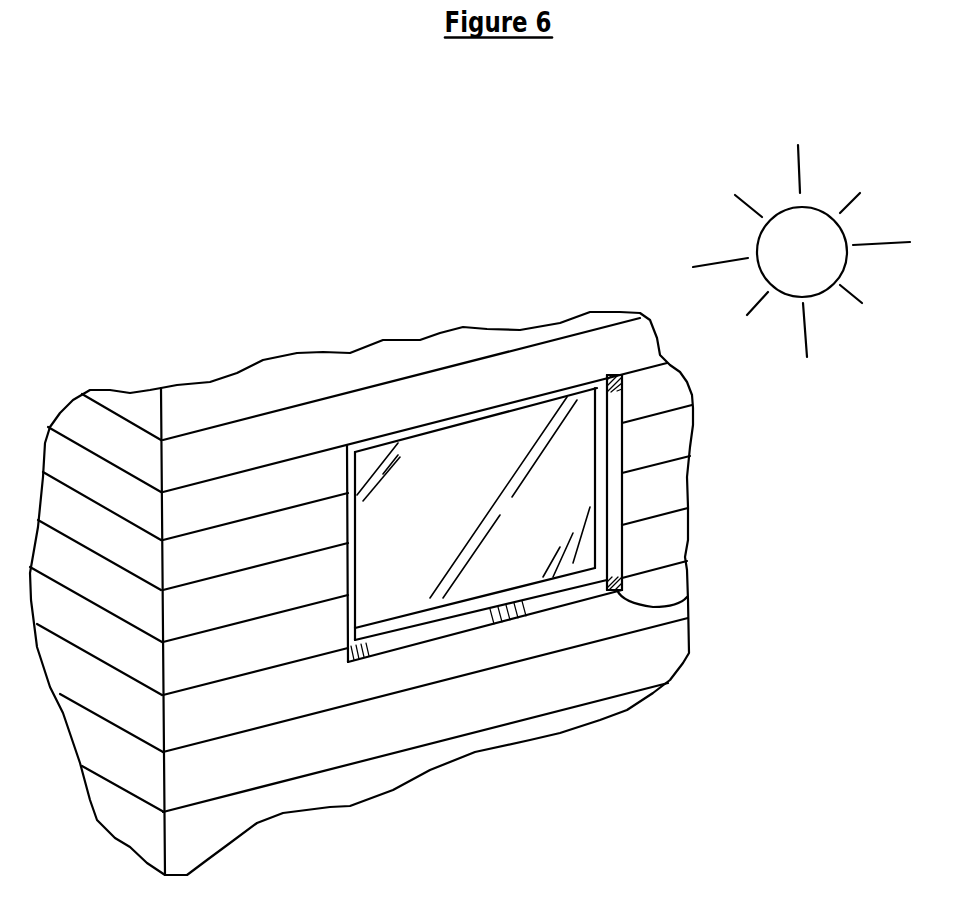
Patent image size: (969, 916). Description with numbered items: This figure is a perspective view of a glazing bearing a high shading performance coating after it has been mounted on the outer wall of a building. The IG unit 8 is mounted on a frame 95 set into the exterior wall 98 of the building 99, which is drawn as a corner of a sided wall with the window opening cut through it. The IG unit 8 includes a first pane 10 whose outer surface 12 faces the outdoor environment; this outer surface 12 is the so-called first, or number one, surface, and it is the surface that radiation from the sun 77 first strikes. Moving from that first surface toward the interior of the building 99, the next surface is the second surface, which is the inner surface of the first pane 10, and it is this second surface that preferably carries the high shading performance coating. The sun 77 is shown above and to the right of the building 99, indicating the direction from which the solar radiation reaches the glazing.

The IG unit 8 is at (520, 583).
The first pane 10 is at (531, 526).
The outer surface 12 is at (460, 459).
The sun 77 is at (810, 259).
The frame 95 is at (580, 387).
The exterior wall 98 is at (258, 716).
The building 99 is at (243, 822).